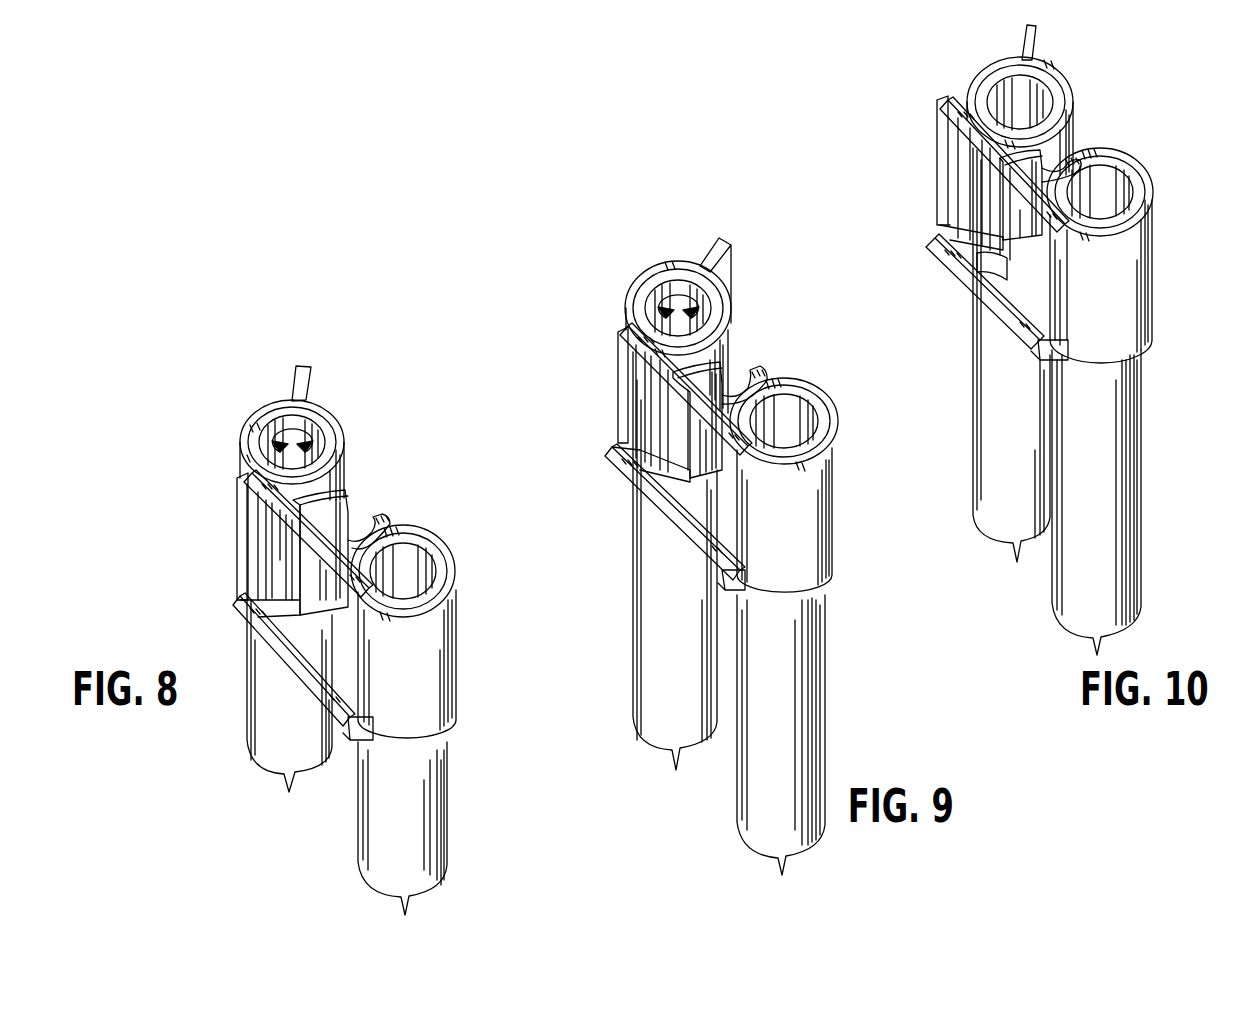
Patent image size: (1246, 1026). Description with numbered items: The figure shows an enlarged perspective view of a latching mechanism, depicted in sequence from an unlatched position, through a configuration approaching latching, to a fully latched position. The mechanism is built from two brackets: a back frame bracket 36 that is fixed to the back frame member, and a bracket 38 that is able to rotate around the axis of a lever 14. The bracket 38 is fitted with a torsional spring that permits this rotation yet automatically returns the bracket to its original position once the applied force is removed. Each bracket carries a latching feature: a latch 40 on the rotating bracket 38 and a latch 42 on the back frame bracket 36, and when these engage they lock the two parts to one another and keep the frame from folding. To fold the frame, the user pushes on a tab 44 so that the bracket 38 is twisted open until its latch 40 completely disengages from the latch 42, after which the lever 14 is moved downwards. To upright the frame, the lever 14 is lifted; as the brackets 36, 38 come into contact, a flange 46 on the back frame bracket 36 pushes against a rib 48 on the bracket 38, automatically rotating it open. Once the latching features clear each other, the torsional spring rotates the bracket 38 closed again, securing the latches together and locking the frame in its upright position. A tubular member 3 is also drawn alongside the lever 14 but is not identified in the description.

In FIG. 8, the tube 3 is at (445, 782).
In FIG. 9, the tube 3 is at (810, 672).
In FIG. 10, the tube 3 is at (1130, 468).
In FIG. 8, the lever 14 is at (255, 713).
In FIG. 9, the lever 14 is at (642, 672).
In FIG. 10, the lever 14 is at (985, 475).
In FIG. 8, the back frame bracket 36 is at (458, 563).
In FIG. 9, the back frame bracket 36 is at (827, 473).
In FIG. 10, the back frame bracket 36 is at (1148, 258).
In FIG. 8, the bracket 38 is at (322, 404).
In FIG. 9, the bracket 38 is at (650, 270).
In FIG. 10, the bracket 38 is at (977, 85).
In FIG. 8, the latch 40 is at (347, 540).
In FIG. 9, the latch 40 is at (717, 377).
In FIG. 10, the latch 40 is at (1037, 163).
In FIG. 8, the latch 42 is at (383, 517).
In FIG. 9, the latch 42 is at (757, 367).
In FIG. 10, the latch 42 is at (1077, 143).
In FIG. 8, the tab 44 is at (297, 382).
In FIG. 9, the tab 44 is at (729, 240).
In FIG. 10, the tab 44 is at (1027, 42).
In FIG. 8, the flange 46 is at (262, 552).
In FIG. 9, the flange 46 is at (637, 405).
In FIG. 10, the flange 46 is at (932, 228).
In FIG. 8, the rib 48 is at (240, 502).
In FIG. 9, the rib 48 is at (621, 324).